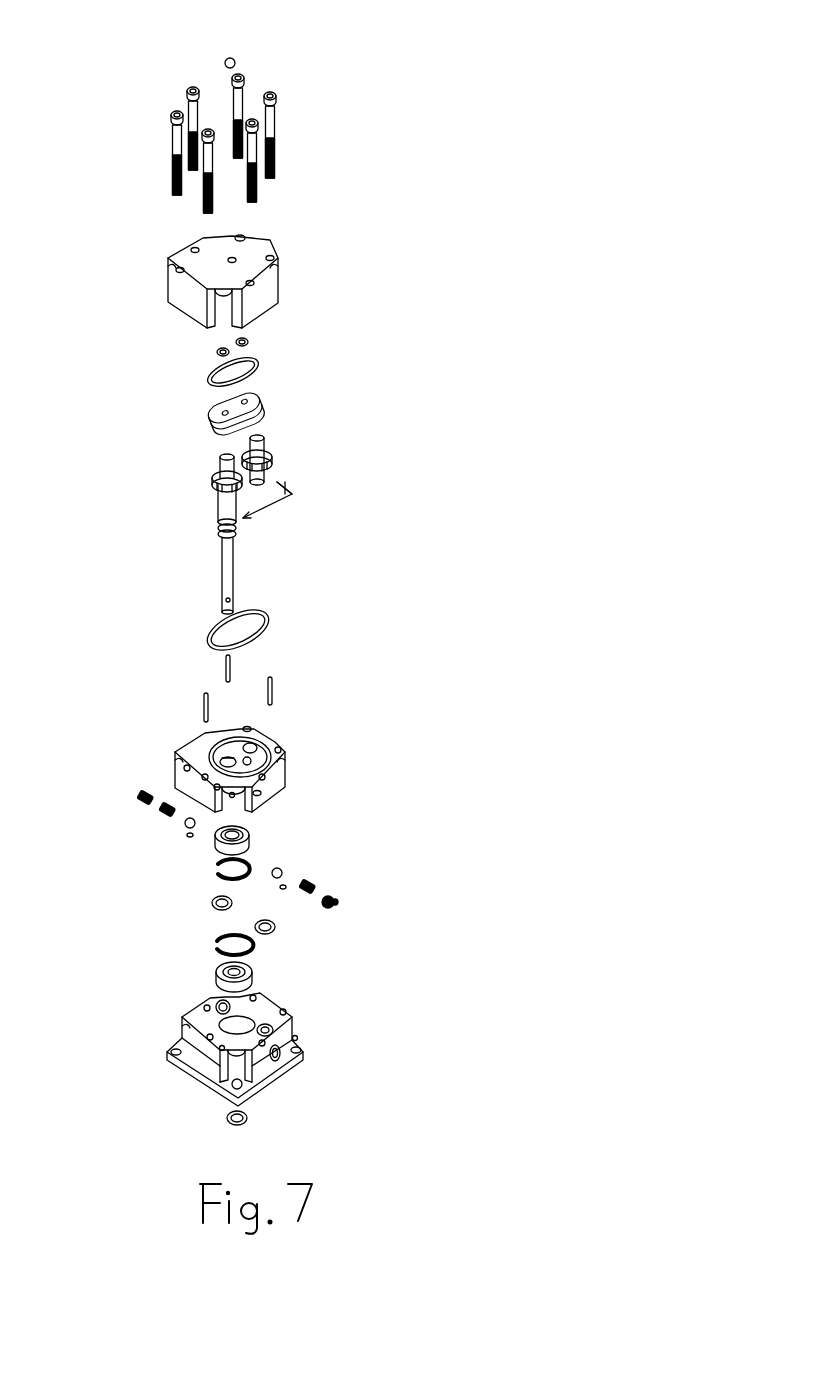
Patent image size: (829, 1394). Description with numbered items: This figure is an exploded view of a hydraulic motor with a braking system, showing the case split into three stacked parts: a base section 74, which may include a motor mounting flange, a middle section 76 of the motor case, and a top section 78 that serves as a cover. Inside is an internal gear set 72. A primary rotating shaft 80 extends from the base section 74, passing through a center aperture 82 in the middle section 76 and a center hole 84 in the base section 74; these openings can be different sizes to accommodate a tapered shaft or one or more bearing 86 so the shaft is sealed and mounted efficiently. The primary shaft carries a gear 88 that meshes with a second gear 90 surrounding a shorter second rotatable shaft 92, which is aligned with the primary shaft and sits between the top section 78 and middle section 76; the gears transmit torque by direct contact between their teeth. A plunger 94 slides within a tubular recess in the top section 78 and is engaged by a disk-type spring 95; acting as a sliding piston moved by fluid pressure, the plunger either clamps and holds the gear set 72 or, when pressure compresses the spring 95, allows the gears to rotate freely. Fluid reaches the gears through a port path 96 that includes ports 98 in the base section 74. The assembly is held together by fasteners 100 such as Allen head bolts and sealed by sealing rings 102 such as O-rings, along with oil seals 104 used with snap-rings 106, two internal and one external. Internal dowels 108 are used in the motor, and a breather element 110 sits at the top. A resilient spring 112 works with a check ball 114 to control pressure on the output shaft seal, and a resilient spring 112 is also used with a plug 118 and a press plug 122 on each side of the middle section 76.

The internal gear set 72 is at (278, 506).
The base section 74 is at (248, 1055).
The middle section 76 is at (237, 742).
The top section 78 is at (278, 255).
The primary rotating shaft 80 is at (213, 512).
The center aperture 82 is at (225, 753).
The center hole 84 is at (225, 1032).
The bearing 86 is at (253, 978).
The gear 88 is at (209, 476).
The second gear 90 is at (273, 460).
The second rotatable shaft 92 is at (293, 494).
The plunger 94 is at (205, 410).
The spring 95 is at (216, 350).
The port path 96 is at (228, 752).
The ports 98 is at (305, 1050).
The fasteners 100 is at (280, 130).
The sealing rings 102 is at (262, 367).
The oil seals 104 is at (247, 837).
The snap-rings 106 is at (212, 875).
The internal dowels 108 is at (275, 687).
The breather element 110 is at (234, 58).
The resilient spring 112 is at (173, 815).
The check ball 114 is at (279, 868).
The plug 118 is at (140, 793).
The press plug 122 is at (187, 836).